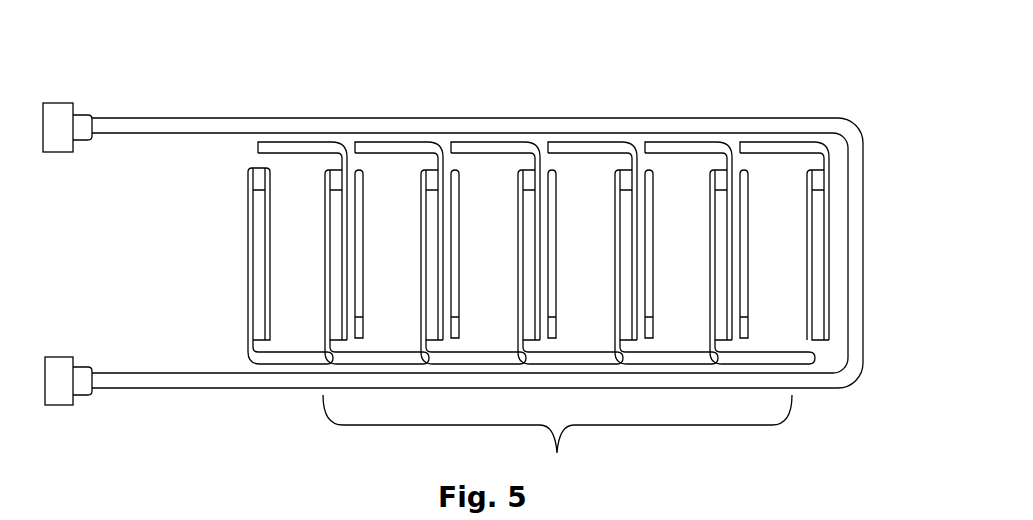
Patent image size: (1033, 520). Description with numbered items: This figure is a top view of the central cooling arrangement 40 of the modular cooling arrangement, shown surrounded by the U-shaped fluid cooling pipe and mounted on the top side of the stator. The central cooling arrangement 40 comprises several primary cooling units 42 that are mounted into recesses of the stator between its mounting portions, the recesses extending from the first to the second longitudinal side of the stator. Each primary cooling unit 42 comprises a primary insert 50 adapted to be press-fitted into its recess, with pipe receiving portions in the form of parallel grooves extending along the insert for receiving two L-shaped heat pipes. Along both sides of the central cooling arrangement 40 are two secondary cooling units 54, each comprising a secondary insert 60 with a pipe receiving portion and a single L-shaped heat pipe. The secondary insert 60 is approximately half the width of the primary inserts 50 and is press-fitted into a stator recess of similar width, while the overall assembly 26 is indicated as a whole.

The flow field assembly 26 is at (686, 59).
The central cooling arrangement 40 is at (557, 445).
The primary cooling unit 42 is at (400, 210).
The primary insert 50 is at (413, 213).
The secondary cooling unit 54 is at (216, 286).
The secondary insert 60 is at (250, 192).